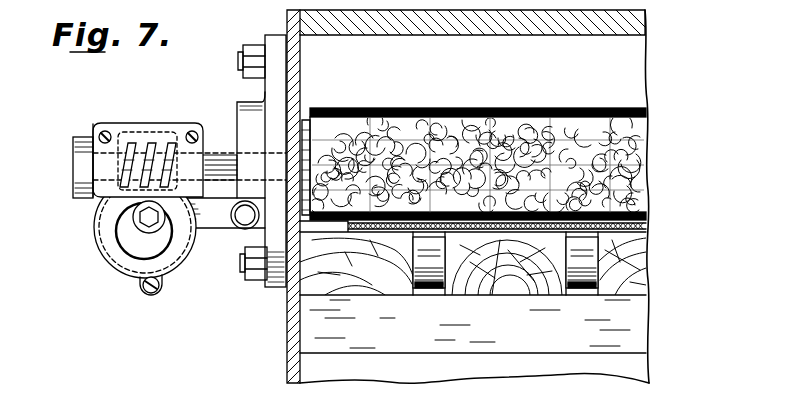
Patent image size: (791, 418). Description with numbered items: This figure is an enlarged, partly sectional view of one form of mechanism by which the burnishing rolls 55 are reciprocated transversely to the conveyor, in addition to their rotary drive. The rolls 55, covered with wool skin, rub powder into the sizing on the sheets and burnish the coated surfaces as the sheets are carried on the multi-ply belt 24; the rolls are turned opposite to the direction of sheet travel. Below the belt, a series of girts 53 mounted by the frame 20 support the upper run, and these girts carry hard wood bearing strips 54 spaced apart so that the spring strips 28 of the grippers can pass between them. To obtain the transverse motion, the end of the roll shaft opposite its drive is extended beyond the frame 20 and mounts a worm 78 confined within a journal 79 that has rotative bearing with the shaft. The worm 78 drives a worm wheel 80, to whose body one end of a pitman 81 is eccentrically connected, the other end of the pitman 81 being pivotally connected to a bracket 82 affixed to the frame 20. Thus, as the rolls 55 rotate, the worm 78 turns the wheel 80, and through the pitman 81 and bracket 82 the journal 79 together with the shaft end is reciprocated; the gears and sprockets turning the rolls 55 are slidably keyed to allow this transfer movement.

The base or frame 20 is at (297, 77).
The multi-ply belt 24 is at (648, 229).
The spring strip 28 is at (425, 290).
The girts 53 is at (635, 337).
The bearing strips 54 is at (367, 287).
The rolls 55 is at (505, 108).
The worm 78 is at (140, 135).
The journal 79 is at (180, 125).
The worm wheel 80 is at (100, 240).
The pitman 81 is at (218, 225).
The bracket 82 is at (268, 288).